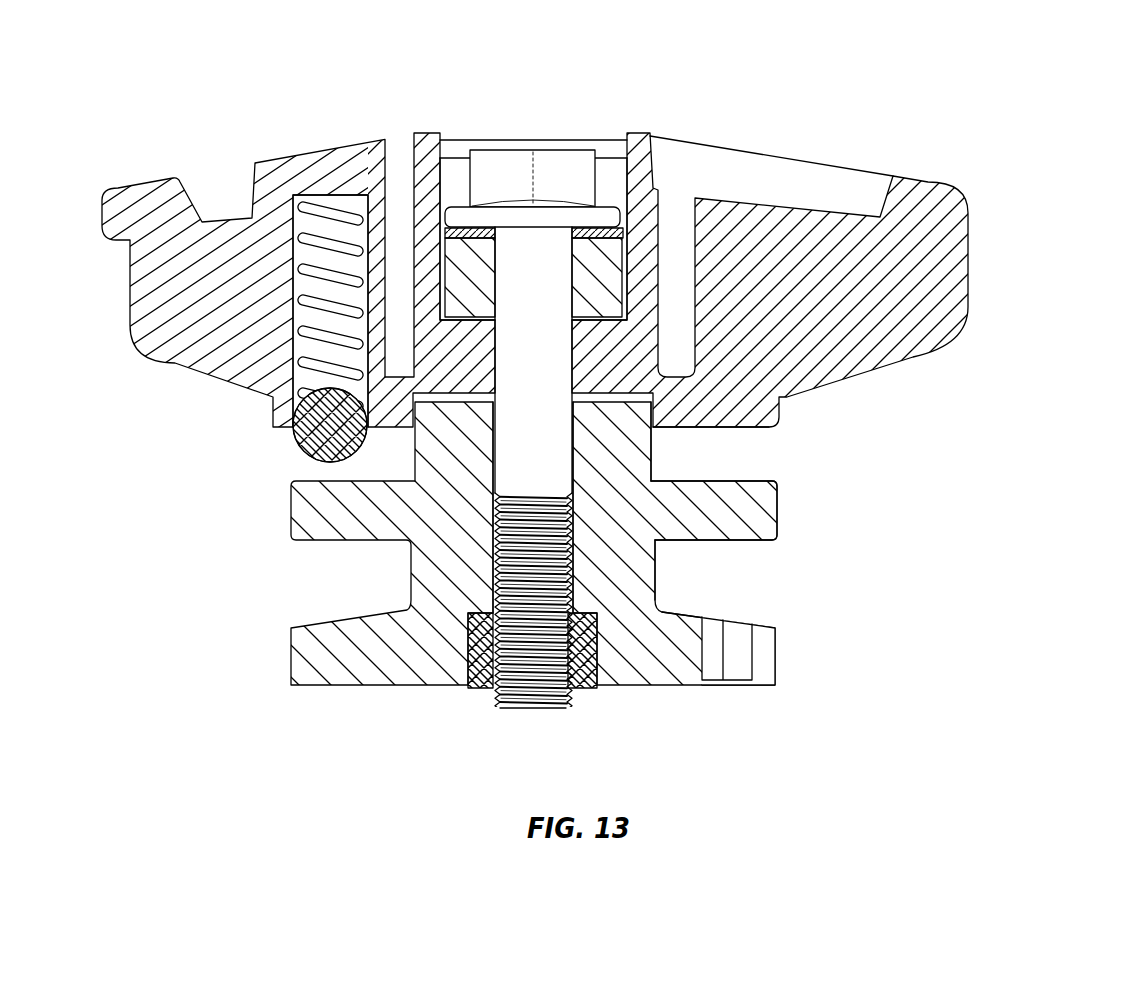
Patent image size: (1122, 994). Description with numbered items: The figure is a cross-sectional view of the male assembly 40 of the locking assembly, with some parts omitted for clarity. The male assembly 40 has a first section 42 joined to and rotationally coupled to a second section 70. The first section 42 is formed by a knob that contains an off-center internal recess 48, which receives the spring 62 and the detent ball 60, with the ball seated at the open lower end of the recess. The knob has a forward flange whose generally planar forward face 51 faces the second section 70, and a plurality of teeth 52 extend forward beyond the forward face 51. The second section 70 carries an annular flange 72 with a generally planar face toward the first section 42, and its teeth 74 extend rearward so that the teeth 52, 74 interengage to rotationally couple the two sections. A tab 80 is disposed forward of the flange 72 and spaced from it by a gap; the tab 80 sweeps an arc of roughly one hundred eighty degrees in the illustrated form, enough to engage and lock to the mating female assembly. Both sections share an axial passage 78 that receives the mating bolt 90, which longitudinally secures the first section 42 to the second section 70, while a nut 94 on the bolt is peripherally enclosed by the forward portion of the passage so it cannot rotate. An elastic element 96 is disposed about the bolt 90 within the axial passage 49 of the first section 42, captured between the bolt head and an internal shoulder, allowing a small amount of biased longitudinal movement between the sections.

The male assembly 40 is at (514, 88).
The first section 42 is at (988, 236).
The internal recess 48 is at (303, 250).
The axial passage 49 is at (609, 188).
The forward face 51 is at (757, 430).
The teeth 52 is at (528, 543).
The teeth 74 is at (430, 430).
The detent ball 60 is at (313, 437).
The spring 62 is at (320, 243).
The second section 70 is at (638, 578).
The annular flange 72 is at (780, 506).
The axial passage 78 is at (490, 553).
The tab 80 is at (765, 656).
The mating bolt 90 is at (545, 465).
The nut 94 is at (468, 672).
The elastic element 96 is at (463, 228).